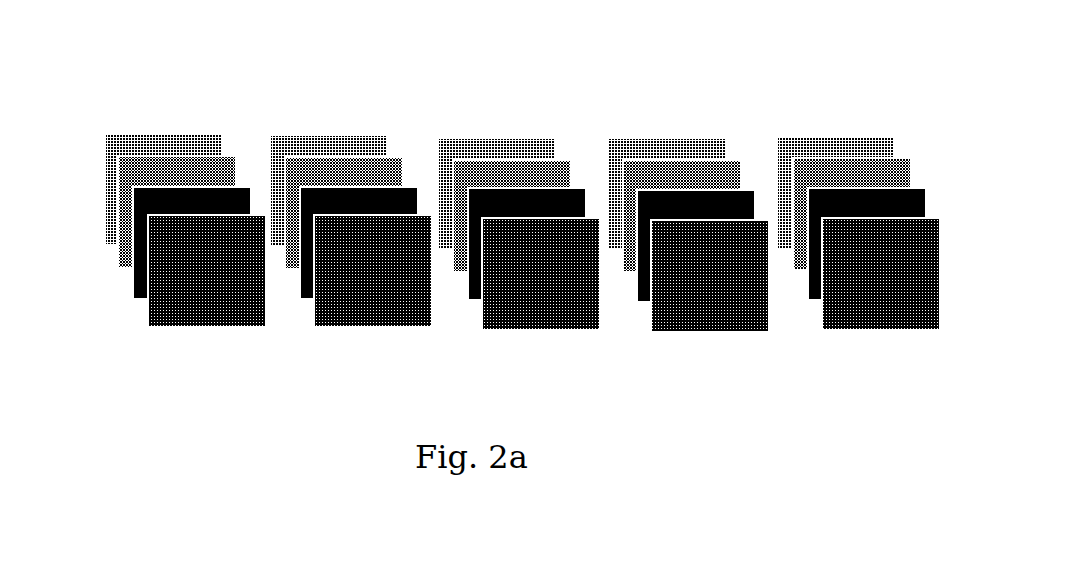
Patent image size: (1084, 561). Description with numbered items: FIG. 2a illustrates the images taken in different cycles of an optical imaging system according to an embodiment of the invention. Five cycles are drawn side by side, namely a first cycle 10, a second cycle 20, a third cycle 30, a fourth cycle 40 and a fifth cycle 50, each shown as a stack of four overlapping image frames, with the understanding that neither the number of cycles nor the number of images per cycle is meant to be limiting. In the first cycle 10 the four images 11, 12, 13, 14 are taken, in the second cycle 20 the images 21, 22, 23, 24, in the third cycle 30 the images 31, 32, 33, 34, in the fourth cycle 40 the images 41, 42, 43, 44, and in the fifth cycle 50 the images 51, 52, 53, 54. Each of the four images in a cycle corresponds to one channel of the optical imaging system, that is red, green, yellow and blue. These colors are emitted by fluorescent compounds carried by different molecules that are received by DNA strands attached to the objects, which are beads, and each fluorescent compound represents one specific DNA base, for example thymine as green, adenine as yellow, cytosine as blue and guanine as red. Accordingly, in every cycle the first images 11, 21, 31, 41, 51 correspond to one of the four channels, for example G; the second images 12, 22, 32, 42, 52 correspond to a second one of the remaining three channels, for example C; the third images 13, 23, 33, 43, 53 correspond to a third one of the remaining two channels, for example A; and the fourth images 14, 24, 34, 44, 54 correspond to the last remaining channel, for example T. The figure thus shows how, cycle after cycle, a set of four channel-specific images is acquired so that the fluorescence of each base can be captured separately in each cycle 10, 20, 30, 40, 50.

The cycle 10 is at (154, 260).
The first image 11 is at (106, 152).
The second image 12 is at (118, 186).
The third image 13 is at (133, 238).
The fourth image 14 is at (150, 315).
The cycle 20 is at (342, 244).
The first image 21 is at (278, 130).
The second image 22 is at (300, 135).
The third image 23 is at (337, 187).
The fourth image 24 is at (368, 215).
The cycle 30 is at (518, 244).
The first image 31 is at (463, 135).
The second image 32 is at (482, 138).
The third image 33 is at (518, 188).
The fourth image 34 is at (552, 218).
The cycle 40 is at (684, 244).
The first image 41 is at (627, 135).
The second image 42 is at (648, 138).
The third image 43 is at (683, 190).
The fourth image 44 is at (716, 220).
The cycle 50 is at (861, 245).
The first image 51 is at (800, 135).
The second image 52 is at (823, 137).
The third image 53 is at (858, 188).
The fourth image 54 is at (893, 218).